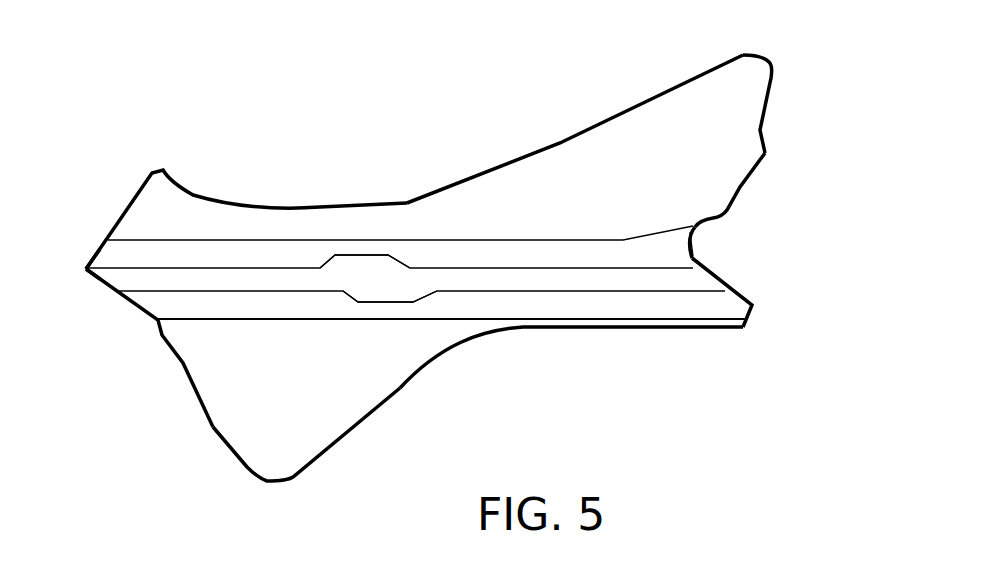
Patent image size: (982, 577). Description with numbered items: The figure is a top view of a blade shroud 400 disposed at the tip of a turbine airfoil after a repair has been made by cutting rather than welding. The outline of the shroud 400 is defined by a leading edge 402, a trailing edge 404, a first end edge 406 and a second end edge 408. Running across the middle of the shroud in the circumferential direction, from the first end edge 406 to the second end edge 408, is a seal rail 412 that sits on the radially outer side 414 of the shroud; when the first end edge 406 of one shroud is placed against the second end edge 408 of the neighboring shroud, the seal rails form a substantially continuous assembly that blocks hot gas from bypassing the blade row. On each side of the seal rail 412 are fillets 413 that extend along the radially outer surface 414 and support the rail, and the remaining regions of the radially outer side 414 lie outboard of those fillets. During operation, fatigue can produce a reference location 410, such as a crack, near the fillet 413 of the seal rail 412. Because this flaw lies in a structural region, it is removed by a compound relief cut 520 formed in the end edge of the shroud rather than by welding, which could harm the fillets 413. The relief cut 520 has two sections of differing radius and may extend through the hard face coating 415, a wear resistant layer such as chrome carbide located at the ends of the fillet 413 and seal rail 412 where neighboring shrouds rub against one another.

The blade shroud 400 is at (366, 106).
The leading edge 402 is at (273, 482).
The trailing edge 404 is at (763, 55).
The first end edge 406 is at (757, 183).
The second end edge 408 is at (82, 272).
The reference location 410 is at (705, 247).
The seal rail 412 is at (396, 288).
The fillets 413 is at (573, 265).
The radially outer side 414 is at (683, 166).
The hard face coating 415 is at (755, 297).
The compound relief cut 520 is at (698, 236).